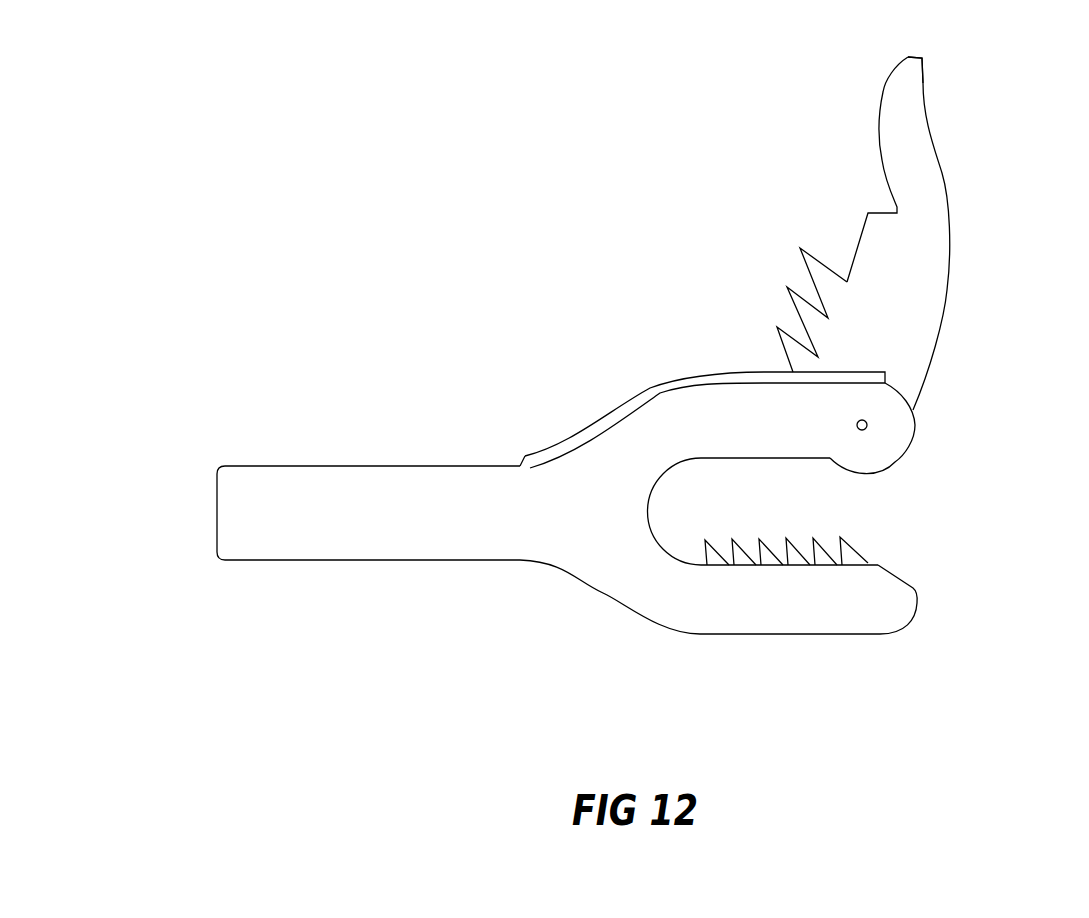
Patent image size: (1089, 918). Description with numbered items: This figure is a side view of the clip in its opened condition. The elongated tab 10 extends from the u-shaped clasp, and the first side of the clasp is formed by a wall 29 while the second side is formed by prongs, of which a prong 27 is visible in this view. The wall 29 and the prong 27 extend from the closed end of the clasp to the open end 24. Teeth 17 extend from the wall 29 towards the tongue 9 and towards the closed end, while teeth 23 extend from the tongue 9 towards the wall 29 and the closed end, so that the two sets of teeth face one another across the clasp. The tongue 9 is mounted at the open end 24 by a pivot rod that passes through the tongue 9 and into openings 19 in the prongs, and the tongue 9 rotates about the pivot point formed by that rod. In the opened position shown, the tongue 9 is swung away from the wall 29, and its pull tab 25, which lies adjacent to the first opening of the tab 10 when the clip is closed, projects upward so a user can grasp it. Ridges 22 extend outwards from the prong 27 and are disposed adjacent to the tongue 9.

The tab 10 is at (485, 537).
The open end 24 is at (903, 453).
The teeth 17 is at (860, 550).
The ridges 22 is at (657, 387).
The prong 27 is at (863, 402).
The openings 19 is at (867, 418).
The tongue 9 is at (923, 223).
The pull tab 25 is at (923, 90).
The teeth 23 is at (825, 280).
The wall 29 is at (663, 337).